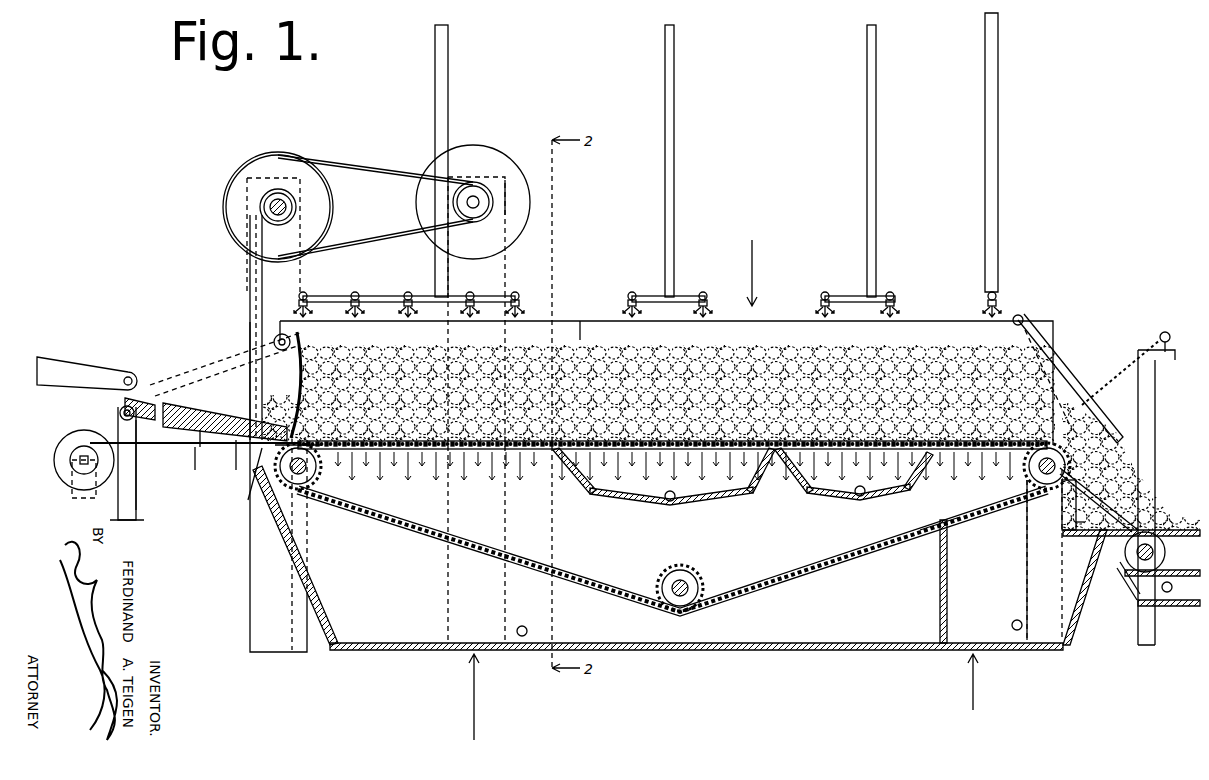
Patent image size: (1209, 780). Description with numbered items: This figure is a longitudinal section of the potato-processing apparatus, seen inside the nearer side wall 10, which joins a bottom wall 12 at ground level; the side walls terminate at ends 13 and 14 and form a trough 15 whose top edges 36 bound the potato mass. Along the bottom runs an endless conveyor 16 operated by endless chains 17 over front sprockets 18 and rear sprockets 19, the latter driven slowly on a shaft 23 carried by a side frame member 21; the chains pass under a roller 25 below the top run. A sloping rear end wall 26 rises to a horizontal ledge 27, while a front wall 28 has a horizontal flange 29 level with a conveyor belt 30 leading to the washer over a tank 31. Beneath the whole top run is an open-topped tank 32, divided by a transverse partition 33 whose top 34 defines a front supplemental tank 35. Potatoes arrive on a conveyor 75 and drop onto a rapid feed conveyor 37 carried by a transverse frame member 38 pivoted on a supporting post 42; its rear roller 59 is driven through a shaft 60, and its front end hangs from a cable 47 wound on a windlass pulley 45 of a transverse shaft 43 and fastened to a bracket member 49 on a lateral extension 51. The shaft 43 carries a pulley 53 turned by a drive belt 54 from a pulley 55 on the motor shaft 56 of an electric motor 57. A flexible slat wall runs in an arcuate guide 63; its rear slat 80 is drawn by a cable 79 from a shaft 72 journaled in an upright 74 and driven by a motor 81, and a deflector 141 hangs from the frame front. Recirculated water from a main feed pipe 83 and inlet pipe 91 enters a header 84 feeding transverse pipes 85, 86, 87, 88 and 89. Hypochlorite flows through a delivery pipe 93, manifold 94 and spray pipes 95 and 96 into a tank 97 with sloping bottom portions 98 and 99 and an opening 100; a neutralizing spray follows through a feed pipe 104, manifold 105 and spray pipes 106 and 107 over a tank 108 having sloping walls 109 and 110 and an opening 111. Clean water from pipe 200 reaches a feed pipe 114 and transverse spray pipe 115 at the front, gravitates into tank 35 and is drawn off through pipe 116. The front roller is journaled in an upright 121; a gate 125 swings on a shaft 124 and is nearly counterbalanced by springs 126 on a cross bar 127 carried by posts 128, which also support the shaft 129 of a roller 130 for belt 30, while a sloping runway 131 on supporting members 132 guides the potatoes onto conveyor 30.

The side wall 10 is at (930, 320).
The bottom wall 12 is at (765, 650).
The end of side wall 13 is at (1055, 346).
The end of side wall 14 is at (263, 335).
The trough member 15 is at (751, 264).
The endless conveyor 16 is at (482, 461).
The endless chains 17 is at (560, 450).
The sprockets 18 is at (1030, 477).
The rear sprocket wheels 19 is at (312, 492).
The side frame member 21 is at (257, 528).
The shaft 23 is at (265, 477).
The roller 25 is at (703, 588).
The rear end wall 26 is at (285, 562).
The horizontal ledge 27 is at (236, 448).
The front wall 28 is at (1087, 572).
The horizontal flange 29 is at (1127, 555).
The conveyor belt 30 is at (1183, 530).
The tank 31 is at (1186, 606).
The open-topped tank 32 is at (471, 707).
The transverse partition 33 is at (940, 570).
The top of partition 34 is at (934, 520).
The front supplemental tank 35 is at (971, 691).
The top edges of side walls 36 is at (582, 320).
The feed conveyor 37 is at (187, 404).
The transverse frame member 38 is at (176, 430).
The supporting post 42 is at (98, 440).
The transverse shaft 43 is at (283, 198).
The windlass pulley 45 is at (287, 217).
The cable 47 is at (250, 260).
The bracket member 49 is at (247, 358).
The lateral extension 51 is at (199, 447).
The pulley 53 is at (267, 165).
The drive belt 54 is at (379, 174).
The pulley 55 is at (488, 178).
The motor shaft 56 is at (476, 191).
The electric motor 57 is at (510, 172).
The roller 59 is at (120, 412).
The shaft 60 is at (106, 480).
The arcuate guide 63 is at (302, 352).
The shaft 72 is at (72, 470).
The upright 74 is at (78, 512).
The conveyor 75 is at (68, 366).
The cable 79 is at (131, 510).
The rear slat 80 is at (195, 470).
The motor 81 is at (58, 450).
The main feed pipe 83 is at (448, 80).
The header 84 is at (394, 296).
The transverse pipe 85 is at (409, 293).
The transverse pipe 86 is at (470, 293).
The transverse pipe 87 is at (355, 293).
The transverse pipe 88 is at (515, 293).
The transverse pipe 89 is at (303, 293).
The inlet pipe 91 is at (522, 636).
The delivery pipe 93 is at (674, 185).
The manifold 94 is at (681, 296).
The spray pipe 95 is at (703, 293).
The spray pipe 96 is at (632, 293).
The tank 97 is at (628, 497).
The sloping bottom 98 is at (714, 494).
The sloping bottom 99 is at (590, 493).
The opening 100 is at (670, 503).
The feed pipe 104 is at (876, 180).
The manifold 105 is at (844, 296).
The spray pipe 106 is at (890, 293).
The spray pipe 107 is at (825, 293).
The tank 108 is at (830, 494).
The sloping wall 109 is at (903, 490).
The sloping wall 110 is at (794, 470).
The opening 111 is at (861, 496).
The feed pipe 114 is at (998, 165).
The transverse spray pipe 115 is at (1000, 293).
The pipe 116 is at (1017, 630).
The upright 121 is at (1038, 578).
The shaft 124 is at (1023, 317).
The gate 125 is at (1072, 387).
The springs 126 is at (1128, 345).
The cross bar 127 is at (1171, 335).
The posts 128 is at (1155, 406).
The shaft 129 is at (1120, 548).
The roller 130 is at (1140, 564).
The deflector 131 is at (1125, 465).
The supporting members 132 is at (1070, 500).
The deflector 141 is at (319, 455).
The pipe 200 is at (1169, 592).